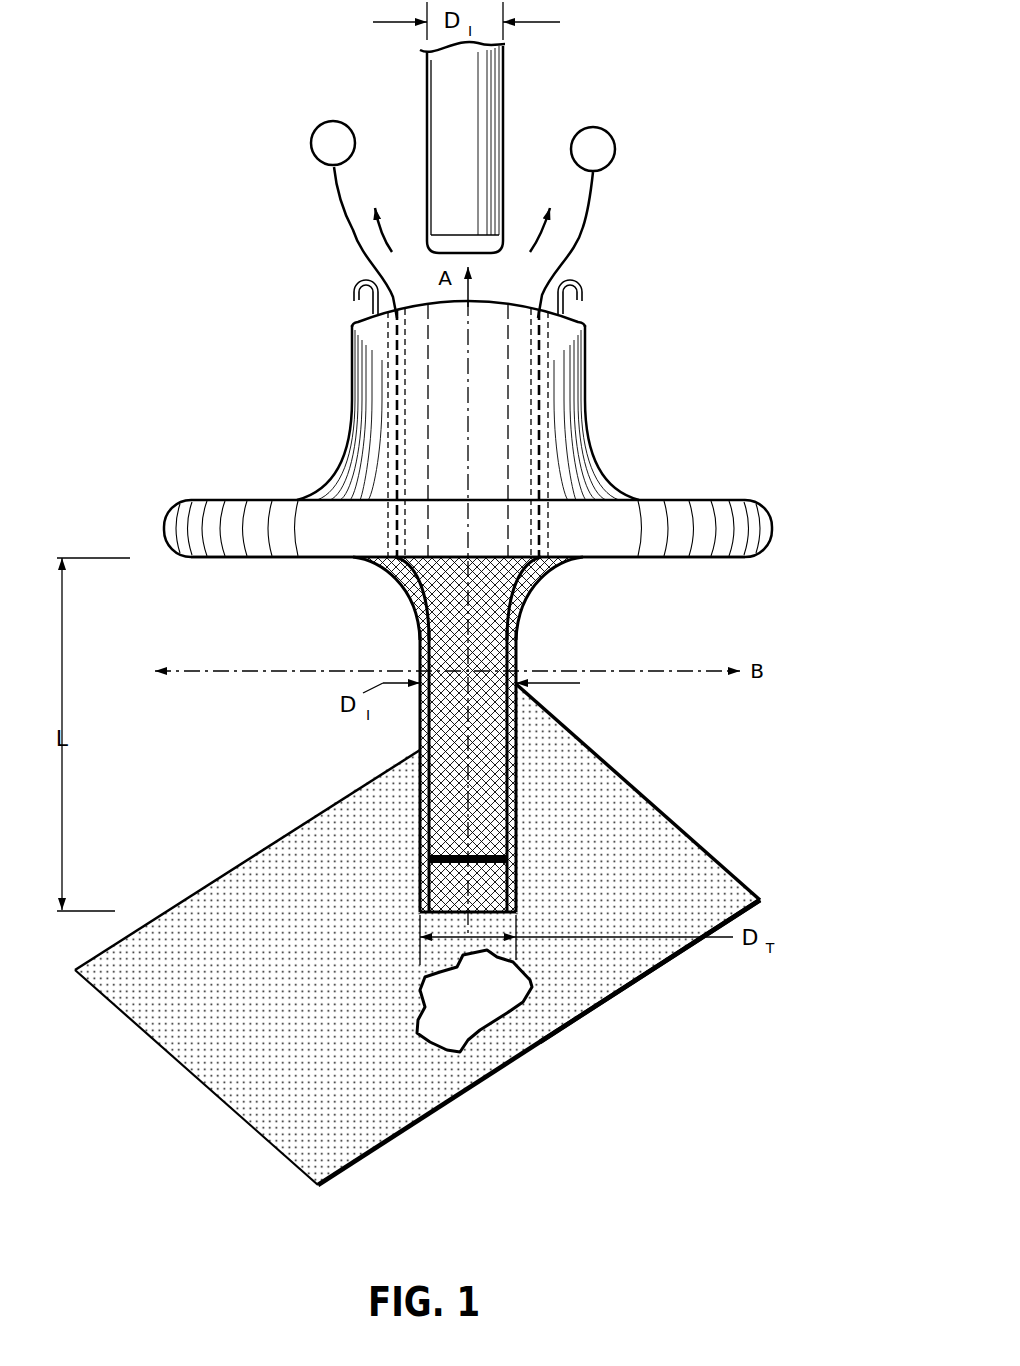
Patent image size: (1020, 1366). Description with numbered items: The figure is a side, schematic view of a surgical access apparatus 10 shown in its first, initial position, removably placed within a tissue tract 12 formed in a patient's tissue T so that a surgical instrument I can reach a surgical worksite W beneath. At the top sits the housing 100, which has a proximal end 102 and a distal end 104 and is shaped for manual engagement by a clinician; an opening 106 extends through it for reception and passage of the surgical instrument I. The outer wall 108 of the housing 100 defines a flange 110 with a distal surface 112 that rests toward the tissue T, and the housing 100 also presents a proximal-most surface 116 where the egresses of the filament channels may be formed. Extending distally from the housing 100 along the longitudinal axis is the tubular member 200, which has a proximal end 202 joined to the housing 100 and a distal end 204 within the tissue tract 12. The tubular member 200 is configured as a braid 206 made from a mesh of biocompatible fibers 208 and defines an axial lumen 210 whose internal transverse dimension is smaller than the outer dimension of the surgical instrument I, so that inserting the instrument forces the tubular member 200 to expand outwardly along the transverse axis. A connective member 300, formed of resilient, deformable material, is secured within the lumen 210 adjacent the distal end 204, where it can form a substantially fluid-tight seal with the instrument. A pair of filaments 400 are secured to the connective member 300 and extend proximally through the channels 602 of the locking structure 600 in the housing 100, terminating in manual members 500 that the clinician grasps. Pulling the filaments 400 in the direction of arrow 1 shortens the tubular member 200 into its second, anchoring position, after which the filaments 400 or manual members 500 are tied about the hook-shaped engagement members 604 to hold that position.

The arrow 1 is at (462, 230).
The surgical access apparatus 10 is at (433, 486).
The tissue tract 12 is at (487, 993).
The housing 100 is at (475, 408).
The proximal end 102 is at (597, 330).
The distal end 104 is at (632, 482).
The opening 106 is at (510, 377).
The outer wall 108 is at (352, 380).
The flange 110 is at (168, 497).
The distal surface 112 is at (222, 560).
The proximal-most surface 116 is at (488, 300).
The tubular member 200 is at (431, 734).
The proximal end 202 is at (563, 562).
The distal end 204 is at (420, 898).
The braid 206 is at (518, 653).
The fibers 208 is at (418, 768).
The lumen 210 is at (420, 727).
The connective member 300 is at (420, 858).
The filaments 400 is at (353, 238).
The manual member 500 is at (334, 121).
The locking structure 600 is at (436, 299).
The channels 602 is at (387, 453).
The engagement members 604 is at (368, 302).
The surgical instrument I is at (505, 78).
The tissue T is at (185, 927).
The surgical worksite W is at (655, 1007).